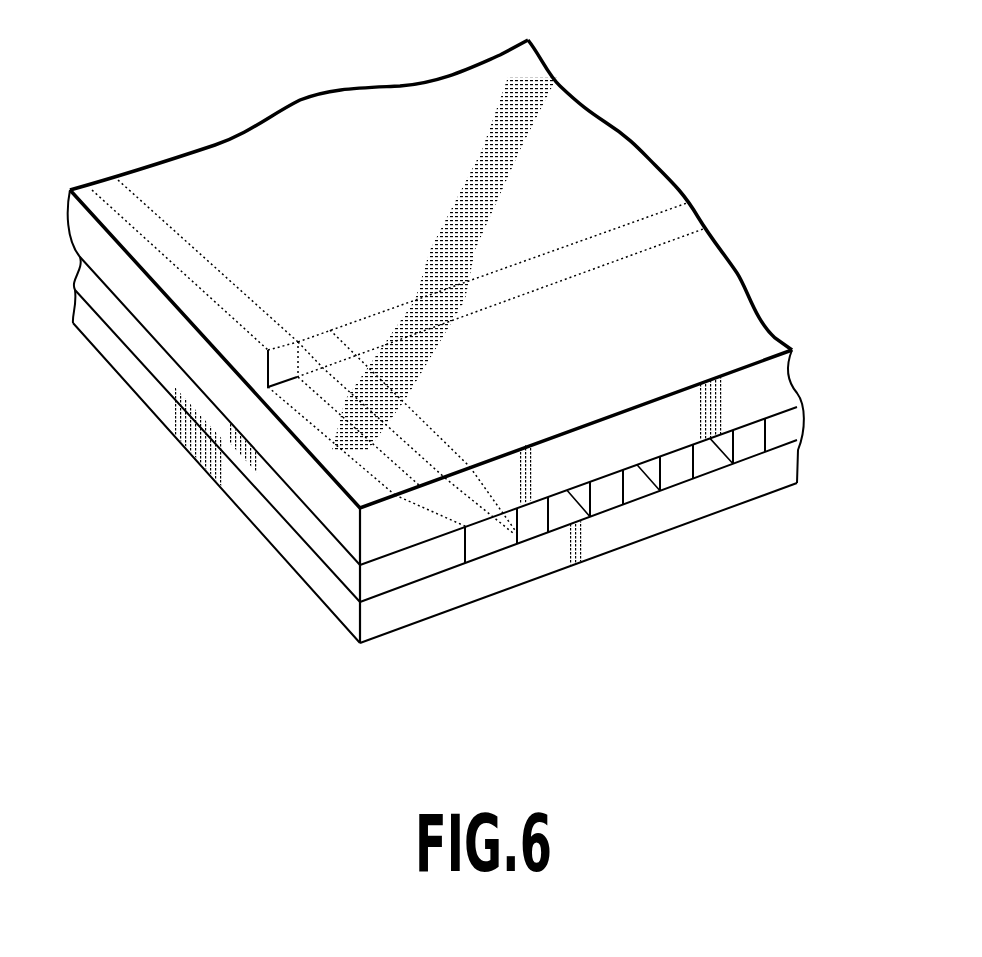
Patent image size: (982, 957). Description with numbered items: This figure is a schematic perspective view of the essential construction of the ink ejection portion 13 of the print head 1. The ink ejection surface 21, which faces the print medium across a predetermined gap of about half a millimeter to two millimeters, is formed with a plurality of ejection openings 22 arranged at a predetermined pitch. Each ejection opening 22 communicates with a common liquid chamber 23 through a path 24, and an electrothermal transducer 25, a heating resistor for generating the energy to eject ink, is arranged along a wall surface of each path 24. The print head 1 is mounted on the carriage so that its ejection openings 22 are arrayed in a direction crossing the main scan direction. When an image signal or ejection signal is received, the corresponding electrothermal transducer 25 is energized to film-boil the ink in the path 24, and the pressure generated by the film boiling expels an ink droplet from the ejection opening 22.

The print head 1 is at (441, 341).
The ink ejection portion 13 is at (697, 268).
The ink ejection surface 21 is at (685, 430).
The ejection opening 22 is at (560, 517).
The common liquid chamber 23 is at (213, 170).
The path 24 is at (377, 353).
The electrothermal transducer 25 is at (427, 470).